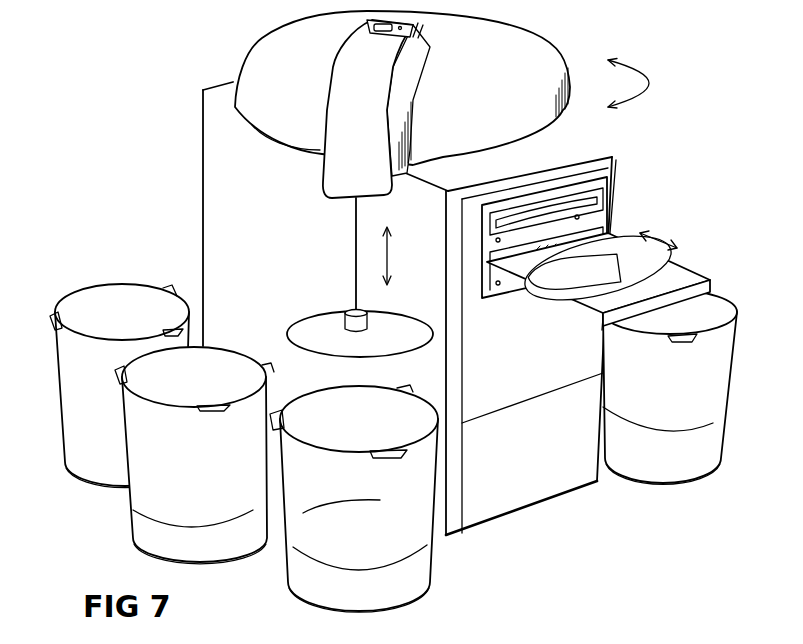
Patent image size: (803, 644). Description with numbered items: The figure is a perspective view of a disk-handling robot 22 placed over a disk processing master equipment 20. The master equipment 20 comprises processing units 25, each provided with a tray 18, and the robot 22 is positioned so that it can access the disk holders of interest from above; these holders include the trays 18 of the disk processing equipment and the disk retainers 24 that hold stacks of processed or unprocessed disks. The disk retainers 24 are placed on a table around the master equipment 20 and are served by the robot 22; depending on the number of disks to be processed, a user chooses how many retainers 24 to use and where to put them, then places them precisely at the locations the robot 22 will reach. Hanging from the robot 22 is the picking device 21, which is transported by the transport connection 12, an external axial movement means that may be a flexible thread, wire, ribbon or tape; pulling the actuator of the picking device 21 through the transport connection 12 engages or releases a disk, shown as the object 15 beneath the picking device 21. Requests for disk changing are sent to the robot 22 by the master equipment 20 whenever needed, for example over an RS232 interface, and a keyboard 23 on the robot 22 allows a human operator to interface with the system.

The transport connection 12 is at (355, 232).
The object 15 is at (293, 328).
The tray 18 is at (680, 273).
The disk processing master equipment 20 is at (570, 147).
The picking device 21 is at (347, 318).
The robot 22 is at (255, 63).
The keyboard 23 is at (373, 27).
The disk retainers 24 is at (660, 413).
The processing units 25 is at (600, 232).